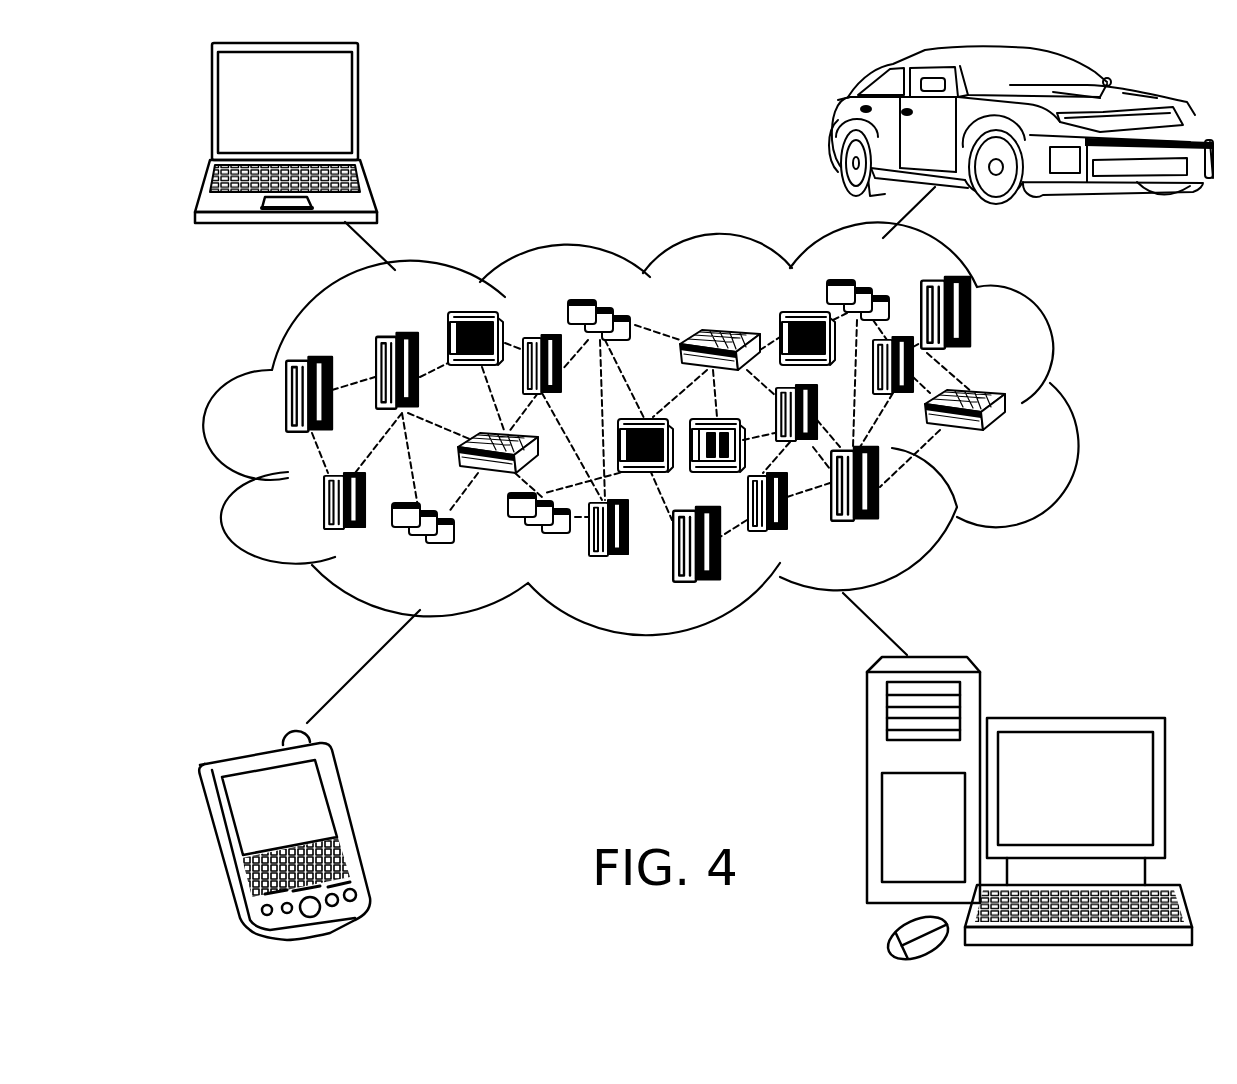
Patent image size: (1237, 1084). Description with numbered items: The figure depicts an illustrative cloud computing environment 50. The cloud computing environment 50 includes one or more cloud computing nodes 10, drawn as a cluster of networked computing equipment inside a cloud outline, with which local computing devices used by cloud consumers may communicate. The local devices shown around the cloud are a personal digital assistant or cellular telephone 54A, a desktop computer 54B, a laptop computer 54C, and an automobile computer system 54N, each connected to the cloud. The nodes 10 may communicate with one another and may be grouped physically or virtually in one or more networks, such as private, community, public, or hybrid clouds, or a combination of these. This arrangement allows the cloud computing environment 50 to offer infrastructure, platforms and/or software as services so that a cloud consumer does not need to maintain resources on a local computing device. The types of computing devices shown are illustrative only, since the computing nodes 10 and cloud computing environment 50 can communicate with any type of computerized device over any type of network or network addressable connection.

The cloud computing environment 50 is at (1073, 407).
The cloud computing nodes 10 is at (1014, 442).
The personal digital assistant or cellular telephone 54A is at (348, 822).
The desktop computer 54B is at (1075, 718).
The laptop computer 54C is at (360, 111).
The automobile computer system 54N is at (835, 130).